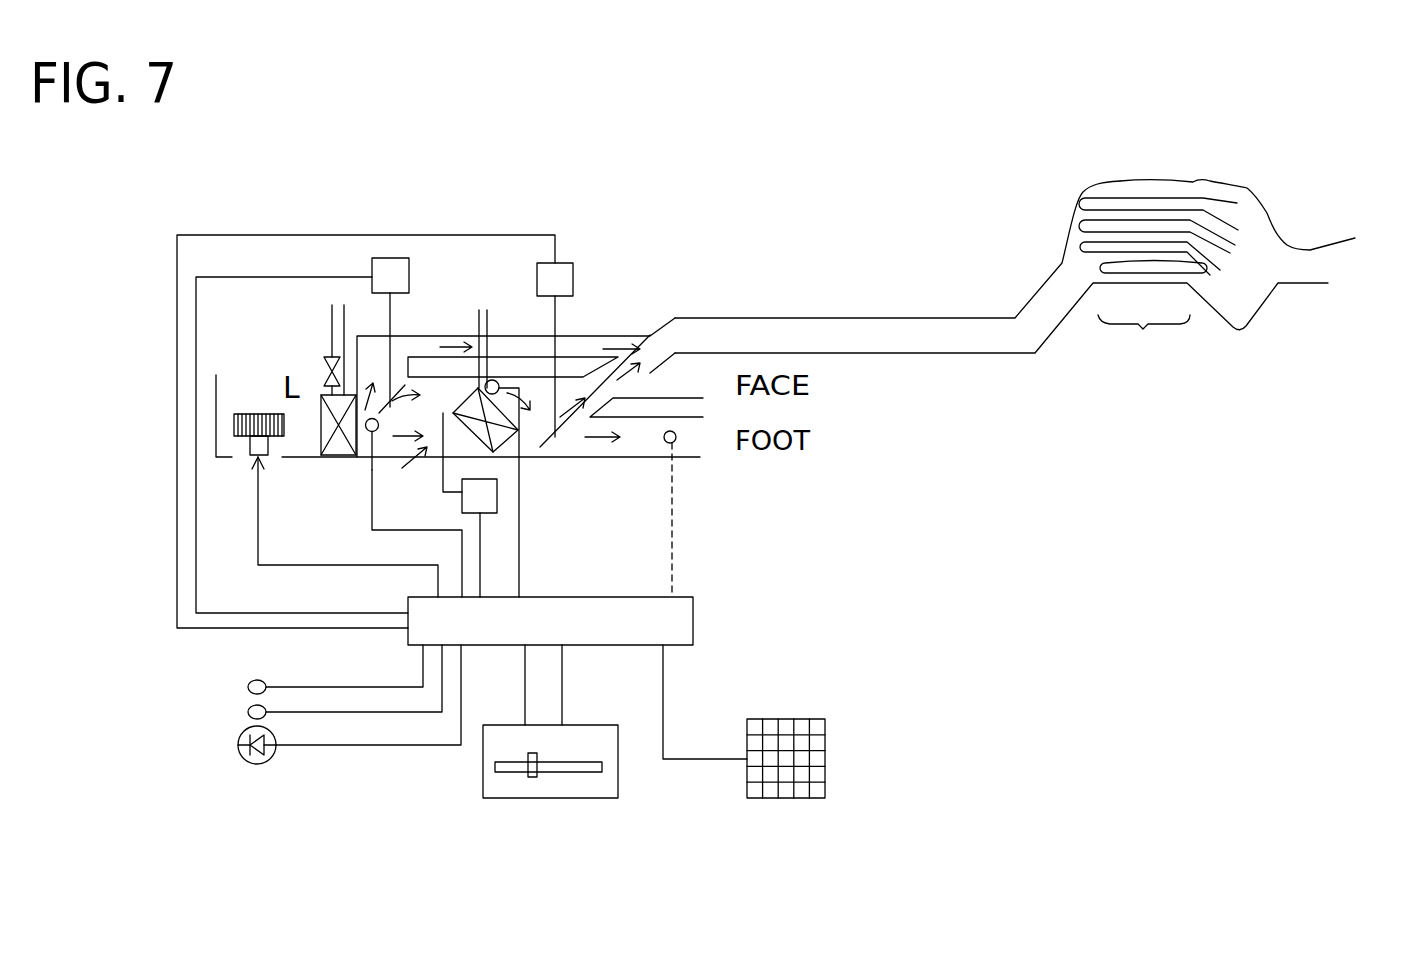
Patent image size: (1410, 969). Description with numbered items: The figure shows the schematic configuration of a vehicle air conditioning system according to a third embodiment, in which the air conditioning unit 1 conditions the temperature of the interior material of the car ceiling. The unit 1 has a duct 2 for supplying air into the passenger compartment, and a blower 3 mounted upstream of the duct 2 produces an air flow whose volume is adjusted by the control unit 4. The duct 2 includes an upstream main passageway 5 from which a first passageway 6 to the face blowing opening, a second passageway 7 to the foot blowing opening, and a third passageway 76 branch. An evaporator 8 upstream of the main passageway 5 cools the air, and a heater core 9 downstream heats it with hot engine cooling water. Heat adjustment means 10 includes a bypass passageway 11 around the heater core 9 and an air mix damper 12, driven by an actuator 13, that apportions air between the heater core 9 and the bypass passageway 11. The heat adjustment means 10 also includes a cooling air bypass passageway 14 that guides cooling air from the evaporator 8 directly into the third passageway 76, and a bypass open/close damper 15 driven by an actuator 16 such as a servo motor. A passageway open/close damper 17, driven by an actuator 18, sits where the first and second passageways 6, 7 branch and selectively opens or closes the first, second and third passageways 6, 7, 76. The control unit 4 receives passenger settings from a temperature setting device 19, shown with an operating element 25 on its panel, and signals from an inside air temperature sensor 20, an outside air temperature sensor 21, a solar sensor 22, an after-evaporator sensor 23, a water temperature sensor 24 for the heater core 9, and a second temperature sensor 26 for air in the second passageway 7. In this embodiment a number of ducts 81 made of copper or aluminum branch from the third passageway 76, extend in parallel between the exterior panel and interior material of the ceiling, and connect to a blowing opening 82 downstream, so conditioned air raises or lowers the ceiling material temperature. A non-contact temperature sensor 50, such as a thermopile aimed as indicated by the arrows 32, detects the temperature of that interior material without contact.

The air conditioning unit 1 is at (602, 265).
The duct 2 is at (595, 455).
The blower 3 is at (242, 457).
The control unit 4 is at (693, 620).
The main passageway 5 is at (525, 433).
The first passageway 6 is at (685, 387).
The second passageway 7 is at (630, 447).
The evaporator 8 is at (330, 457).
The heater core 9 is at (481, 457).
The heat adjustment means 10 is at (387, 468).
The bypass passageway 11 is at (467, 383).
The air mix damper 12 is at (418, 395).
The actuator 13 is at (497, 505).
The cooling air bypass passageway 14 is at (572, 350).
The bypass open/close damper 15 is at (381, 409).
The actuator 16 is at (409, 278).
The passageway open/close damper 17 is at (575, 440).
The actuator 18 is at (573, 284).
The temperature setting device 19 is at (585, 725).
The inside air temperature sensor 20 is at (248, 683).
The outside air temperature sensor 21 is at (248, 708).
The solar sensor 22 is at (242, 733).
The after-evaporator sensor 23 is at (370, 490).
The water temperature sensor 24 is at (503, 382).
The slide knob 25 is at (550, 762).
The second temperature sensor 26 is at (675, 443).
The arrows 32 is at (605, 763).
The non-contact temperature sensor 50 is at (778, 790).
The third passageway 76 is at (767, 350).
The ducts 81 is at (1103, 193).
The blowing opening 82 is at (1310, 270).